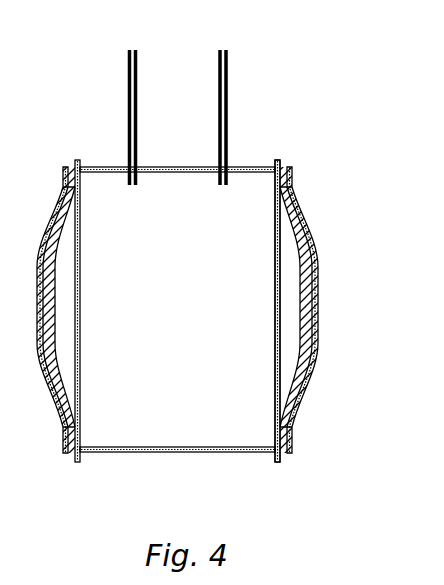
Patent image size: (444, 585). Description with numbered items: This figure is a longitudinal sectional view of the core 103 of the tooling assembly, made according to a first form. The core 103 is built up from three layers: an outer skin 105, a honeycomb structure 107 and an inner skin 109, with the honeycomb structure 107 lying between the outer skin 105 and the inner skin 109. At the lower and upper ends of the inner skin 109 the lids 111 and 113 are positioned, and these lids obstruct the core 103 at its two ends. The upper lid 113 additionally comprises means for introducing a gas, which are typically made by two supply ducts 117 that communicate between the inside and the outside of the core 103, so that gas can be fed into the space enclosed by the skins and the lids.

The core 103 is at (94, 94).
The outer skin 105 is at (295, 195).
The honeycomb structure 107 is at (306, 253).
The inner skin 109 is at (280, 306).
The lid 111 is at (198, 453).
The lid 113 is at (165, 166).
The supply ducts 117 is at (218, 66).